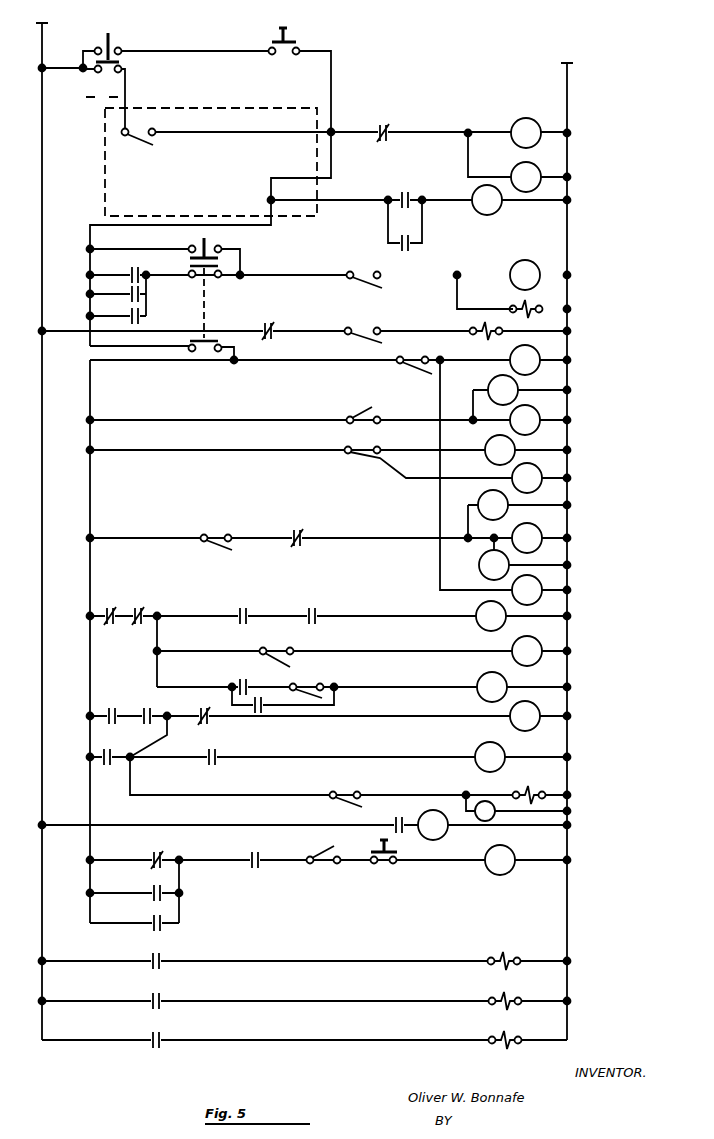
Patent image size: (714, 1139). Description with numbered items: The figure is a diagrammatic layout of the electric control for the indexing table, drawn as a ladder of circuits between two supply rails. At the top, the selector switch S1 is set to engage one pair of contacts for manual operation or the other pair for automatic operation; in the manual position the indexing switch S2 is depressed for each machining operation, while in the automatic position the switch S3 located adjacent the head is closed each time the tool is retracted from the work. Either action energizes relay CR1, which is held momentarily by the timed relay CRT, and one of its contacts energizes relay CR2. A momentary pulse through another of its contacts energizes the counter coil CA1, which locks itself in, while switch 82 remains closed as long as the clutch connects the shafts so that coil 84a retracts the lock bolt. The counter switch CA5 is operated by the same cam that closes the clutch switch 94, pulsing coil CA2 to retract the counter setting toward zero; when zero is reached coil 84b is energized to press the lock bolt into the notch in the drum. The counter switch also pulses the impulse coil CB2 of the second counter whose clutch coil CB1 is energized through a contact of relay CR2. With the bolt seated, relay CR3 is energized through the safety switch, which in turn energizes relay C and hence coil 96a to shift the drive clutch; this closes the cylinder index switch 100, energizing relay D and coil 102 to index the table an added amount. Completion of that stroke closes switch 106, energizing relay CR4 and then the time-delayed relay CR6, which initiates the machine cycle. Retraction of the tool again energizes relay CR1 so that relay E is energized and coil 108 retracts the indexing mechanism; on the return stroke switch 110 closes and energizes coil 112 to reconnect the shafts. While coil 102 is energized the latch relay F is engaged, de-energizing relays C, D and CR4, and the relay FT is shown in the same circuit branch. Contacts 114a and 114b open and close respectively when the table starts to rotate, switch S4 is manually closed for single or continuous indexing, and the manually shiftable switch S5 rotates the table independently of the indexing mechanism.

The switch S1 is at (116, 27).
The indexing switch S2 is at (291, 40).
The switch S3 is at (140, 128).
The switch S4 is at (385, 868).
The manually shiftable switch S5 is at (208, 295).
The switch 82 is at (357, 271).
The clutch switch 94 is at (352, 316).
The coil 84a is at (540, 305).
The coil 84b is at (470, 326).
The cylinder index switch 100 is at (272, 648).
The switch 106 is at (318, 682).
The switch 110 is at (343, 790).
The coil 112 is at (557, 788).
The contact 114a is at (222, 520).
The contact 114b is at (318, 866).
The coil 96a is at (504, 951).
The coil 102 is at (512, 993).
The coil 108 is at (508, 1038).
The relay CR1 is at (523, 125).
The timed relay CRT is at (515, 170).
The relay CR2 is at (492, 214).
The coil CA1 is at (532, 252).
The coil CA2 is at (540, 357).
The counter switch CA5 is at (412, 372).
The relay CR3 is at (488, 447).
The clutch coil CB1 is at (545, 537).
The impulse coil CB2 is at (545, 589).
The relay C is at (477, 610).
The relay D is at (513, 647).
The relay CR4 is at (503, 678).
The relay E is at (538, 714).
The latch relay F is at (478, 800).
The relay FT is at (440, 838).
The relay CR6 is at (512, 855).